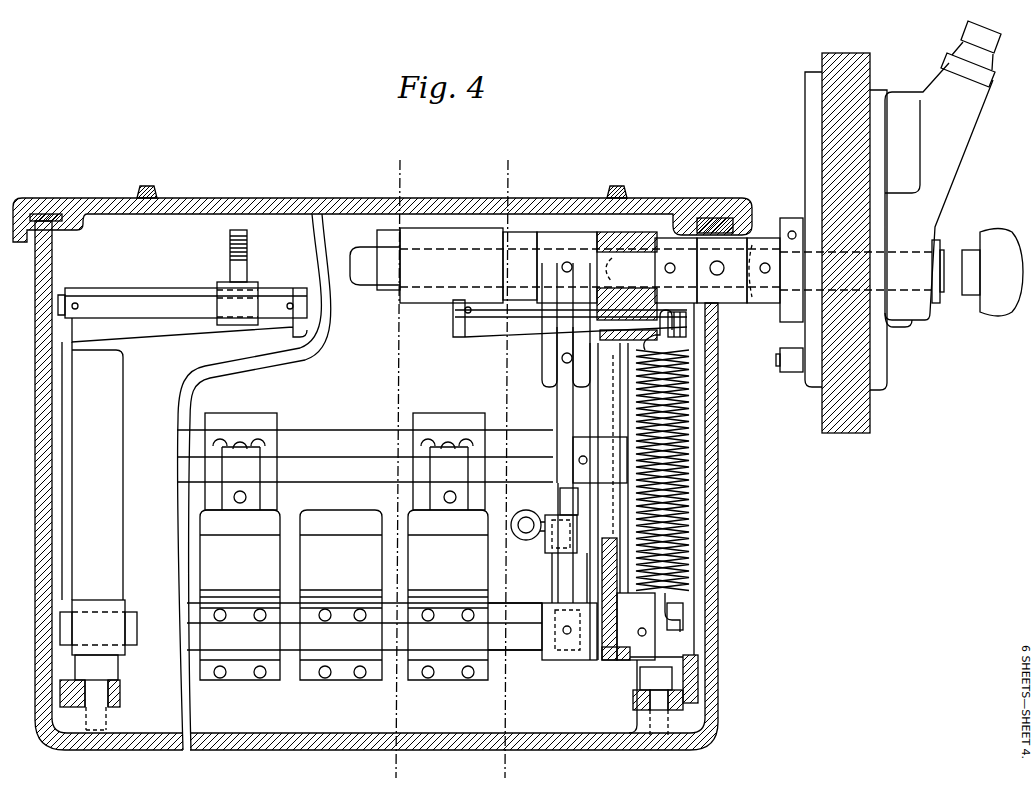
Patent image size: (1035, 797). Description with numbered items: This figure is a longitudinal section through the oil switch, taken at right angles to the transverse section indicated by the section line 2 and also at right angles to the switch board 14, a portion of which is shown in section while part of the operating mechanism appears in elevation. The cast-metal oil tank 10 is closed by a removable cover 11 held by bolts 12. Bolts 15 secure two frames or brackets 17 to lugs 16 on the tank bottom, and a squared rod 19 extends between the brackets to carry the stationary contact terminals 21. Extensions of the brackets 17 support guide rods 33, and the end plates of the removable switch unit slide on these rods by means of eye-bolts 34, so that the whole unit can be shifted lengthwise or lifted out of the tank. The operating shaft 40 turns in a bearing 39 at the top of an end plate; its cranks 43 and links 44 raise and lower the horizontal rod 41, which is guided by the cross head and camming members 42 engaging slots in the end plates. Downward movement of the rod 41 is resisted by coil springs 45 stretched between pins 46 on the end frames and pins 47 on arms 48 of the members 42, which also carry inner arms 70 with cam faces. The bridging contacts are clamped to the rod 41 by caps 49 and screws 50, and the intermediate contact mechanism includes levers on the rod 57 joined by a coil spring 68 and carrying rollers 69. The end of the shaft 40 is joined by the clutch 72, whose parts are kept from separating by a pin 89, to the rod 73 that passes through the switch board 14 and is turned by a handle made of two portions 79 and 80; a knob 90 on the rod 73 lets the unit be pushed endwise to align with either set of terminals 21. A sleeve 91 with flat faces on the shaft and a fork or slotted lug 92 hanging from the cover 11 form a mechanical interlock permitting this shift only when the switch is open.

The section line 2— 2 is at (426, 159).
The oil tank 10 is at (714, 645).
The removable cover 11 is at (251, 203).
The bolts 12 is at (149, 190).
The switch board 14 is at (840, 436).
The bolts 15 is at (643, 677).
The lugs 16 is at (637, 723).
The frames or brackets 17 is at (698, 672).
The rod or bar 19 is at (293, 640).
The stationary contact terminals 21 is at (344, 595).
The guide rods or supporting bars 33 is at (96, 300).
The eye-bolts 34 is at (232, 270).
The bearing 39 is at (647, 237).
The operating shaft 40 is at (360, 278).
The vertically movable horizontal rod 41 is at (328, 440).
The cross head and camming members 42 is at (618, 440).
The cranks 43 is at (545, 370).
The links 44 is at (557, 415).
The coil springs 45 is at (682, 559).
The pins 46 is at (688, 325).
The pins 47 is at (684, 613).
The arms 48 is at (607, 655).
The caps 49 is at (220, 420).
The screws 50 is at (265, 433).
The rod 57 is at (527, 645).
The coil spring 68 is at (565, 532).
The rollers 69 is at (552, 562).
The arms 70 is at (562, 640).
The clutch 72 is at (757, 240).
The rod 73 is at (942, 262).
The handle portion 79 is at (978, 90).
The handle portion 80 is at (948, 176).
The pin 89 is at (722, 272).
The knob 90 is at (985, 318).
The sleeve 91 is at (432, 305).
The fork or slotted lug 92 is at (386, 293).